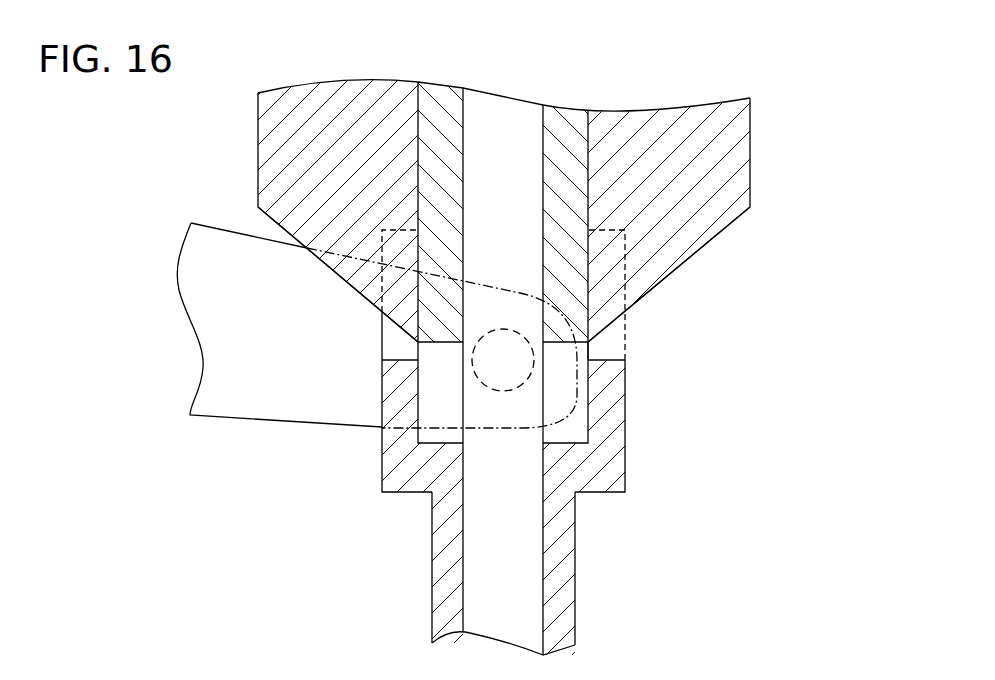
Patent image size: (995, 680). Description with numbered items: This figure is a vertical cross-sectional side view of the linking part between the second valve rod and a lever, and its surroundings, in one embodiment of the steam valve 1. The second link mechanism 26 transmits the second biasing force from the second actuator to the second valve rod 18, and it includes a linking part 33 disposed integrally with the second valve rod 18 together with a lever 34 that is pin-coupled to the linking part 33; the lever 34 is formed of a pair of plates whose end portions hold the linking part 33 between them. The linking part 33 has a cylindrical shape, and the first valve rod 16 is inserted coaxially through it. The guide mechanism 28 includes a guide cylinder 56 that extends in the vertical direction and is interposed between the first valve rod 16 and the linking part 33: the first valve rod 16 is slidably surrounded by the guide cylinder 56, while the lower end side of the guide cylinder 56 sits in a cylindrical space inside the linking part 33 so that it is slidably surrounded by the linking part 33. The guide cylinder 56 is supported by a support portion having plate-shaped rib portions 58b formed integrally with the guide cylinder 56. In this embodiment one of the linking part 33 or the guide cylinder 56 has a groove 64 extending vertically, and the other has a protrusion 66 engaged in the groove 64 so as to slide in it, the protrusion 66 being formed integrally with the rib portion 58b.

The steam valve 1 is at (743, 67).
The first valve rod 16 is at (517, 520).
The second valve rod 18 is at (578, 563).
The second link mechanism 26 is at (227, 225).
The guide mechanism 28 is at (766, 128).
The linking part 33 is at (628, 387).
The lever 34 is at (260, 238).
The guide cylinder 56 is at (590, 270).
The rib portion 58b is at (678, 122).
The groove 64 is at (608, 343).
The protrusion 66 is at (608, 297).